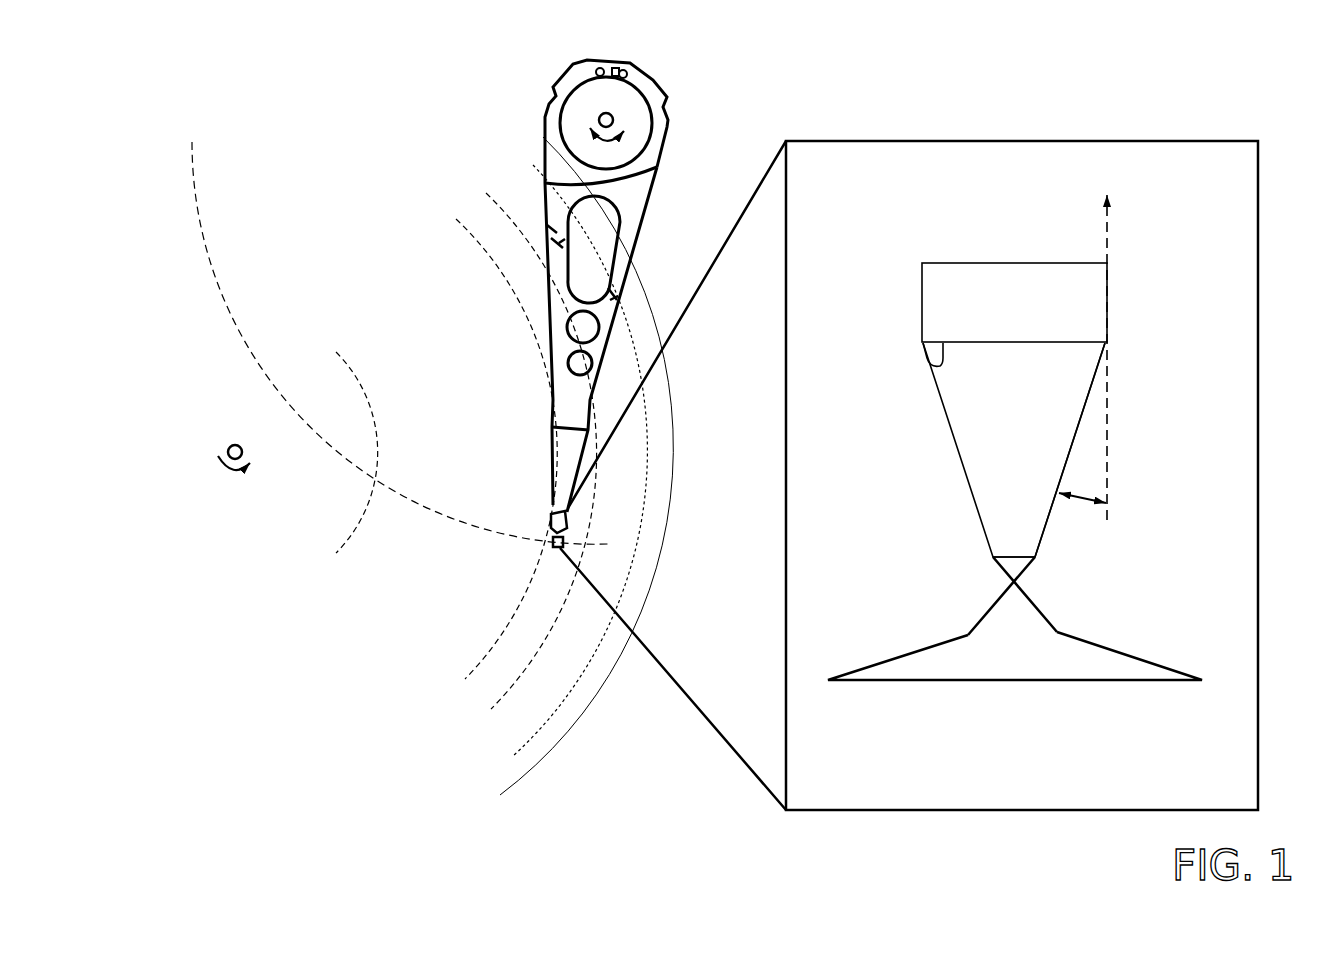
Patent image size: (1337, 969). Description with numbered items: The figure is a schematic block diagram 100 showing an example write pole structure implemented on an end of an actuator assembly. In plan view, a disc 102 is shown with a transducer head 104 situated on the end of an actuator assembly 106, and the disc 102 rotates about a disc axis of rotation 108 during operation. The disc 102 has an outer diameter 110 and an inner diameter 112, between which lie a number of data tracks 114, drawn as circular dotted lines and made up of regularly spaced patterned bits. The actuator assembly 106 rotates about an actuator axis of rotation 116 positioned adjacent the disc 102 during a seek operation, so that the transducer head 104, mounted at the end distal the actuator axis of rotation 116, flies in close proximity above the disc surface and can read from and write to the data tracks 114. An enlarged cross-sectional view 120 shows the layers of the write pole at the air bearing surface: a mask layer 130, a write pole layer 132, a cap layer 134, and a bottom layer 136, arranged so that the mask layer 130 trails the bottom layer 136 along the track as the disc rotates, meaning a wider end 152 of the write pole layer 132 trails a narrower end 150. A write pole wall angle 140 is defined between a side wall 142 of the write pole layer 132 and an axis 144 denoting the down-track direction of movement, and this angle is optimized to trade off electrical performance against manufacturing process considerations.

The schematic block diagram 100 is at (247, 138).
The disc 102 is at (266, 664).
The transducer head 104 is at (553, 548).
The actuator assembly 106 is at (546, 112).
The disc axis of rotation 108 is at (227, 451).
The outer diameter 110 is at (522, 745).
The inner diameter 112 is at (342, 538).
The data tracks 114 is at (469, 695).
The actuator axis of rotation 116 is at (592, 124).
The cross-sectional view 120 is at (855, 810).
The mask layer 130 is at (1017, 300).
The write pole layer 132 is at (945, 410).
The cap layer 134 is at (1013, 583).
The bottom layer 136 is at (923, 643).
The write pole wall angle 140 is at (1083, 512).
The side wall 142 is at (1063, 474).
The axis 144 is at (1107, 417).
The narrower end 150 is at (1005, 556).
The wider end 152 is at (936, 366).